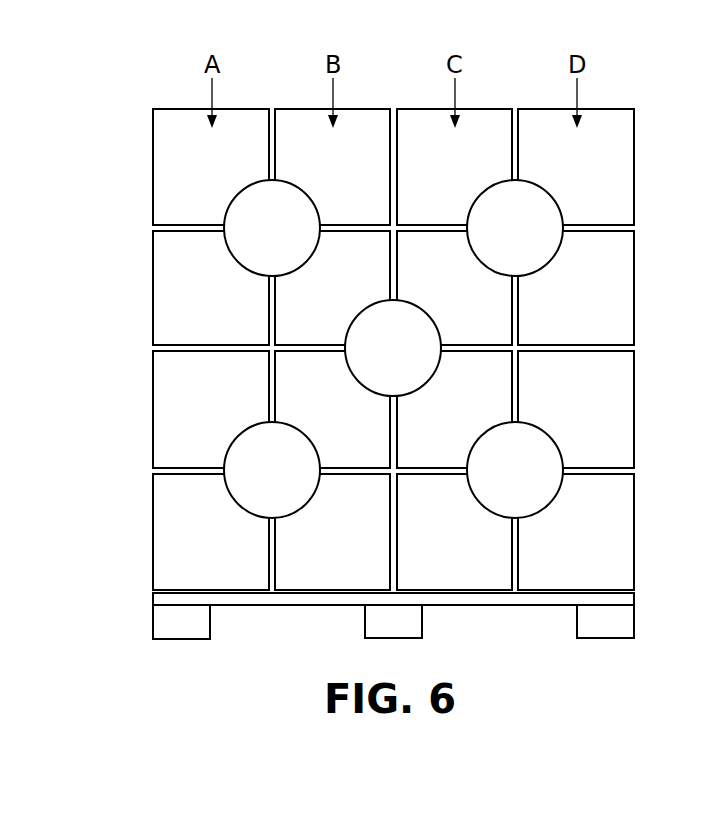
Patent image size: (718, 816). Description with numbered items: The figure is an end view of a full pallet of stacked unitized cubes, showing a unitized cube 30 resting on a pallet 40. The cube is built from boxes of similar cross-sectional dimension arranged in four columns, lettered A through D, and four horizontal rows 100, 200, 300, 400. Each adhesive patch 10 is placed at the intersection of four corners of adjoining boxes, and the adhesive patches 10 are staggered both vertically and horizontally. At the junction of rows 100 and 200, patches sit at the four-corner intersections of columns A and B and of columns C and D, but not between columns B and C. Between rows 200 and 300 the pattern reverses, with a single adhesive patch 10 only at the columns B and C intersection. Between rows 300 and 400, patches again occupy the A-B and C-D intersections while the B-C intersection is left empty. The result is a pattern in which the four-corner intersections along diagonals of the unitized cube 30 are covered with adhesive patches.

The adhesive patch 10 is at (227, 210).
The unitized cube 30 is at (132, 245).
The pallet 40 is at (142, 620).
The row 100 is at (142, 545).
The row 200 is at (142, 415).
The row 300 is at (142, 305).
The row 400 is at (128, 140).